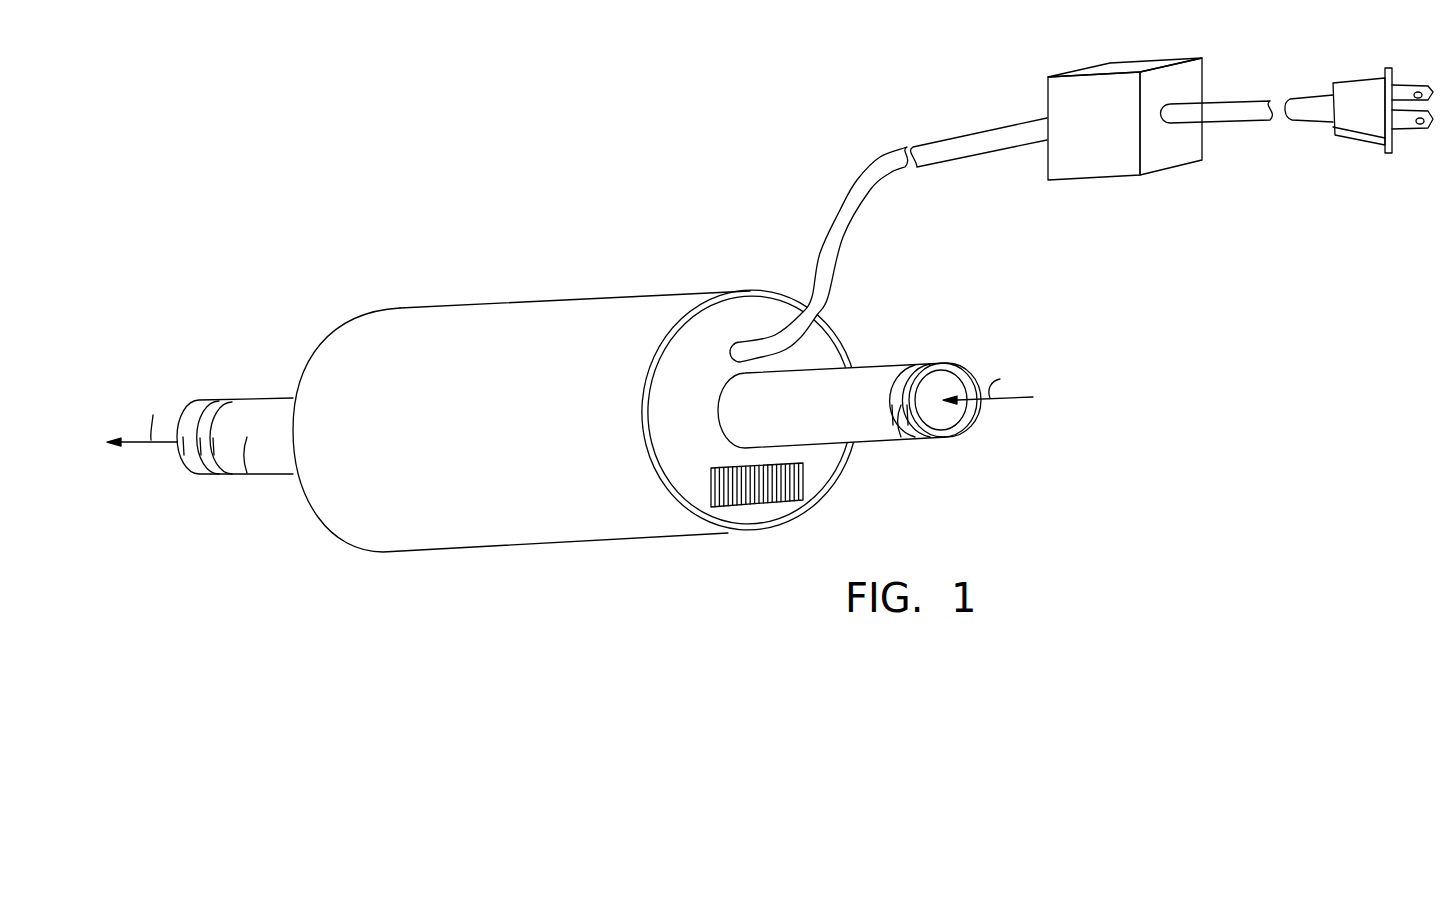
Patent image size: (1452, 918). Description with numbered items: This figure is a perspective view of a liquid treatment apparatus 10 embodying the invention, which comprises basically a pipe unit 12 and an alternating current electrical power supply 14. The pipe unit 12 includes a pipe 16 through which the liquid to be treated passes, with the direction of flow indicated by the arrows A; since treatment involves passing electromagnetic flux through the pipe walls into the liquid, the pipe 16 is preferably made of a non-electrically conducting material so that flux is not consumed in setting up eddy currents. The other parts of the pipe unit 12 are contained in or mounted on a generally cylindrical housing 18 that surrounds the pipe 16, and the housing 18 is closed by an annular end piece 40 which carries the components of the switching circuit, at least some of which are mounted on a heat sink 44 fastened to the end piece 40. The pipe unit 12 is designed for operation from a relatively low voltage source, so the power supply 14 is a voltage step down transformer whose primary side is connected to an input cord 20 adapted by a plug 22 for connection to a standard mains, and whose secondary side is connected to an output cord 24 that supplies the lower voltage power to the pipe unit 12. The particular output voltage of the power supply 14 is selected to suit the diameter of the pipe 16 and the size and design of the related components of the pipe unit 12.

The apparatus 10 is at (543, 234).
The pipe unit 12 is at (600, 297).
The power supply 14 is at (1110, 67).
The pipe 16 is at (872, 380).
The housing 18 is at (563, 517).
The input cord 20 is at (1218, 117).
The plug 22 is at (1362, 112).
The output cord 24 is at (953, 150).
The end piece 40 is at (820, 355).
The heat sink 44 is at (800, 480).